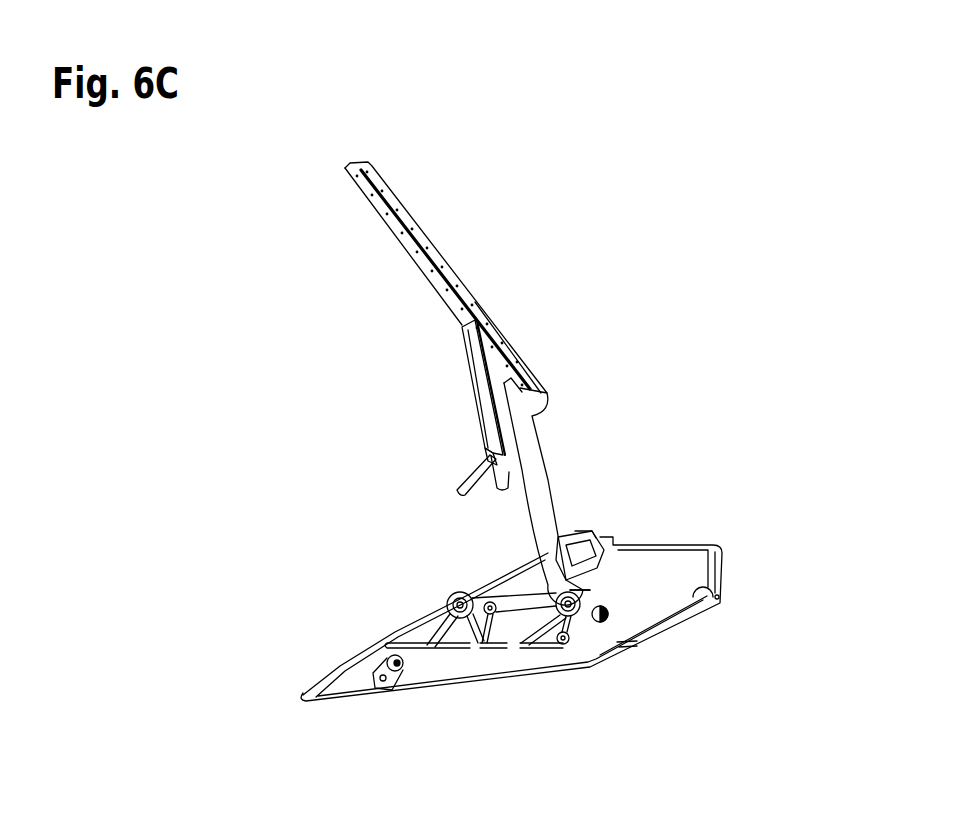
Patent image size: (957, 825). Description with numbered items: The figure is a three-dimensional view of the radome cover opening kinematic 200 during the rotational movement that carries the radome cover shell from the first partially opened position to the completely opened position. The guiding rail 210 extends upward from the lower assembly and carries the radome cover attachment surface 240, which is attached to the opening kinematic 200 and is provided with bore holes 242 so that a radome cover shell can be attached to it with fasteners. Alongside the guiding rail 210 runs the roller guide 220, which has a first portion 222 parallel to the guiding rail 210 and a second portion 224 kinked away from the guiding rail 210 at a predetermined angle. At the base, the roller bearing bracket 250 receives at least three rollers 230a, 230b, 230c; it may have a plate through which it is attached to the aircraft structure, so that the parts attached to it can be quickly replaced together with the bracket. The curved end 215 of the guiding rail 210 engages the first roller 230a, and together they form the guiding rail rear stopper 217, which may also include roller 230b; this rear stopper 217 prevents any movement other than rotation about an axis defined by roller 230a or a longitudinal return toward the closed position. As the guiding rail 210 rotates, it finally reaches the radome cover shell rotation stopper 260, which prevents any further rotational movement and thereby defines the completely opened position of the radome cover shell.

The radome cover opening kinematic 200 is at (600, 512).
The guiding rail 210 is at (525, 443).
The curved end 215 is at (602, 597).
The guiding rail rear stopper 217 is at (592, 592).
The roller guide 220 is at (486, 466).
The first portion 222 is at (473, 382).
The second portion 224 is at (456, 485).
The roller 230a is at (548, 585).
The roller 230b is at (580, 607).
The roller 230c is at (455, 600).
The radome cover attachment surface 240 is at (447, 273).
The bore holes 242 is at (380, 183).
The roller bearing bracket 250 is at (648, 602).
The radome cover shell rotation stopper 260 is at (557, 532).